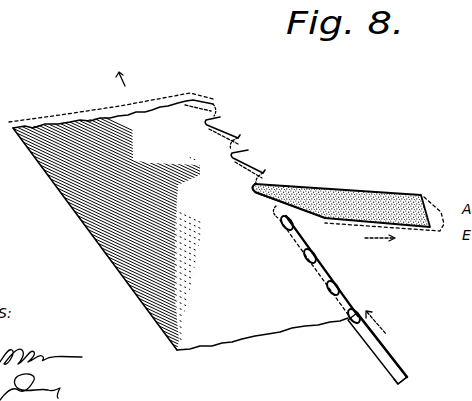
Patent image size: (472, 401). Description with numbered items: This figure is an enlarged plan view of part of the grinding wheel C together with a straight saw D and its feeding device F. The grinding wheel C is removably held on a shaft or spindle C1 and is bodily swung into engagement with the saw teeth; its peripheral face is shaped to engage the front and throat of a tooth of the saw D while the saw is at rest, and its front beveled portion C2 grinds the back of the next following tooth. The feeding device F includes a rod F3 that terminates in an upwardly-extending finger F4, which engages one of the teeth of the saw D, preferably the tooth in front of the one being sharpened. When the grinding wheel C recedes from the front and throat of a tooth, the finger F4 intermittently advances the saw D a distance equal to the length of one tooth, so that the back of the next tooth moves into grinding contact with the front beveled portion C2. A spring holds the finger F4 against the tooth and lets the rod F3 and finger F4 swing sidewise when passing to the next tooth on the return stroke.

The straight saw D is at (72, 193).
The grinding wheel C is at (409, 200).
The shaft or spindle C1 is at (135, 125).
The front beveled portion C2 is at (296, 209).
The feeding device F is at (377, 348).
The rod F3 is at (400, 372).
The finger F4 is at (285, 228).